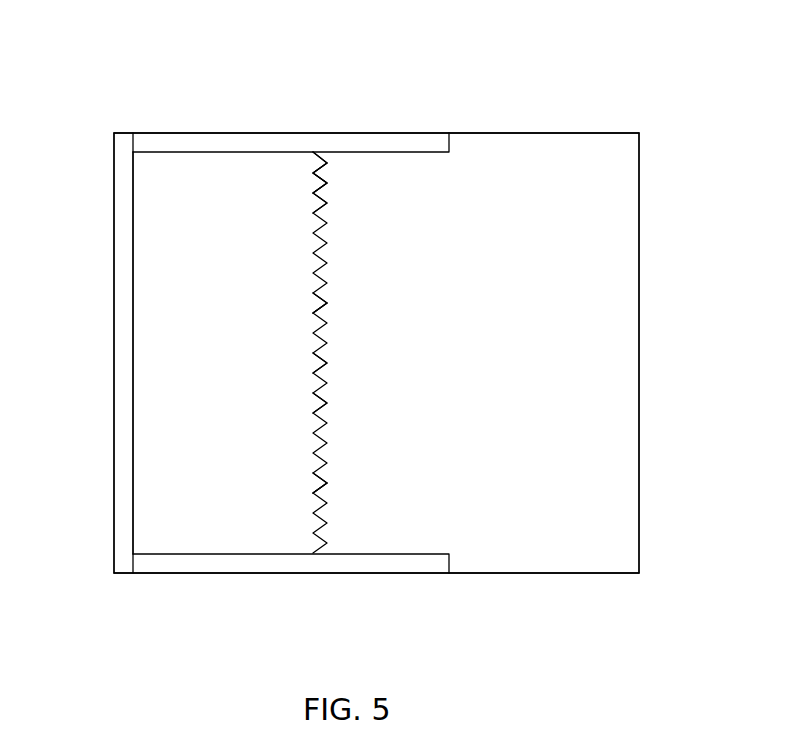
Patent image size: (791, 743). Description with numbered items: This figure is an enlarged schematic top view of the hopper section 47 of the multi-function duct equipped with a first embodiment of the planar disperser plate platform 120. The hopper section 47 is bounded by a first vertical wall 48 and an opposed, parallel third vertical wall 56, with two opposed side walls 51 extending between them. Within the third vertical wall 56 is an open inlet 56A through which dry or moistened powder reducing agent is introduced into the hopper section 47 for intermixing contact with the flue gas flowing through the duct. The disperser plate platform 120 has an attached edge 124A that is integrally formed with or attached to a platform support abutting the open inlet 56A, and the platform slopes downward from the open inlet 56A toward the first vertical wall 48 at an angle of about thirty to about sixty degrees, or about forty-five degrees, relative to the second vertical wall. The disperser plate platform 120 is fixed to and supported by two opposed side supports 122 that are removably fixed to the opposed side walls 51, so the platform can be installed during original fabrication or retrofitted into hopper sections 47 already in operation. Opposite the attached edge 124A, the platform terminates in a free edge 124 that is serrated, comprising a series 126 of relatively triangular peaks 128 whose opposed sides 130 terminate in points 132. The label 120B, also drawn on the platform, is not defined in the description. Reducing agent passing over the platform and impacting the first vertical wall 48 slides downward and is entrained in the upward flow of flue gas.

The hopper section 47 is at (627, 74).
The first vertical wall 48 is at (640, 438).
The side walls 51 is at (518, 133).
The third vertical wall 56 is at (114, 363).
The open inlet 56A is at (133, 273).
The disperser plate platform 120 is at (290, 268).
The end portion of filter medium 120B is at (233, 190).
The side supports 122 is at (391, 143).
The free edge 124 is at (343, 406).
The attached edge 124A is at (133, 430).
The series 126 is at (326, 363).
The triangular peaks 128 is at (326, 177).
The opposed sides 130 is at (326, 299).
The points 132 is at (326, 305).